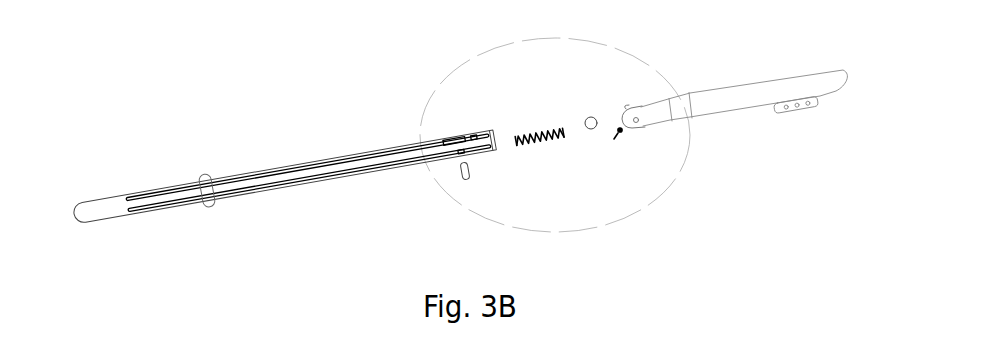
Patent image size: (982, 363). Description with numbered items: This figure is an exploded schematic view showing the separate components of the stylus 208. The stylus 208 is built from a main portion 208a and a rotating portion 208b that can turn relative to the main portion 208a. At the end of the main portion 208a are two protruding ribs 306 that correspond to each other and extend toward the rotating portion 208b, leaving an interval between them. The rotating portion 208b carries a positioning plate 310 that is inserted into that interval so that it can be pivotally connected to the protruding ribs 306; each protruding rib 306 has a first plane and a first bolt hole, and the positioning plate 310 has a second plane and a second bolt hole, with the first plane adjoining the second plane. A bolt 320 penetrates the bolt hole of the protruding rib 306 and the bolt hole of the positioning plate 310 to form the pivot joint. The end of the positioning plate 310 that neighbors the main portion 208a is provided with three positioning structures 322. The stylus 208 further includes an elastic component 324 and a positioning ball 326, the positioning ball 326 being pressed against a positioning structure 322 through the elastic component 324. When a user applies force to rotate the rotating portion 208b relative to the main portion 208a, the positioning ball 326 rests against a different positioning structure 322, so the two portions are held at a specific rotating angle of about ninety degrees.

The stylus 208 is at (352, 66).
The main portion 208a is at (314, 181).
The rotating portion 208b is at (768, 85).
The protruding rib 306 is at (483, 131).
The positioning plate 310 is at (651, 128).
The bolt 320 is at (471, 173).
The positioning structure 322 is at (619, 132).
The elastic component 324 is at (539, 127).
The positioning ball 326 is at (591, 116).